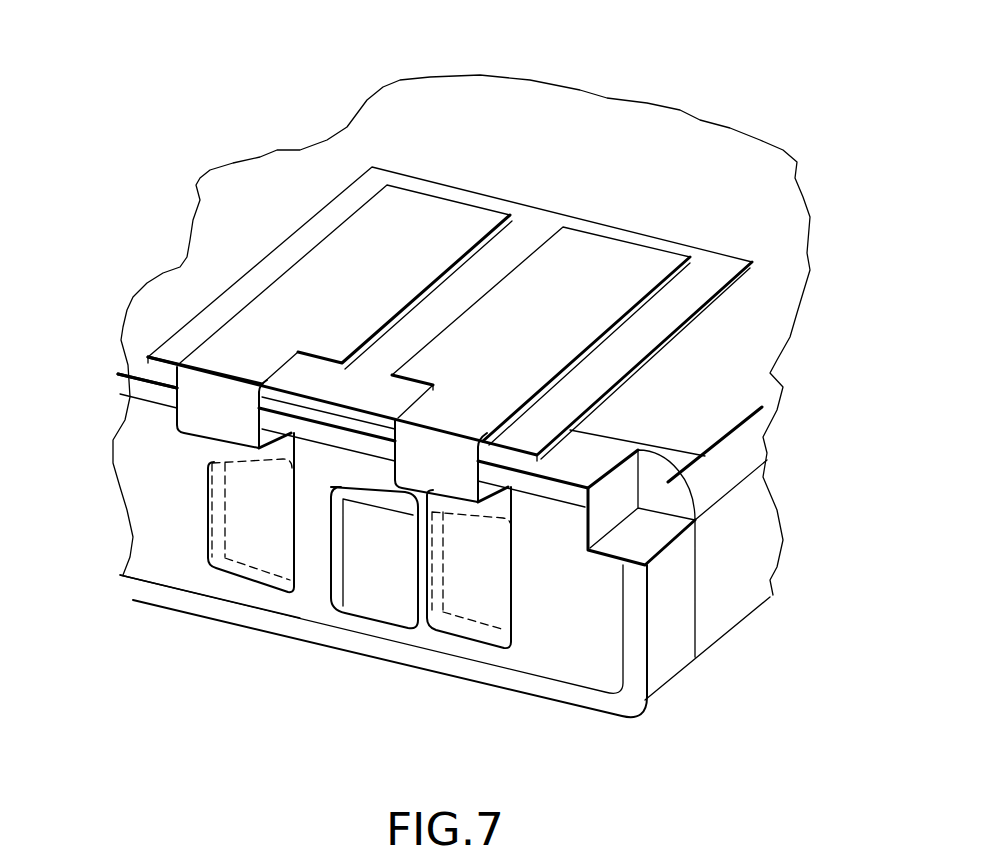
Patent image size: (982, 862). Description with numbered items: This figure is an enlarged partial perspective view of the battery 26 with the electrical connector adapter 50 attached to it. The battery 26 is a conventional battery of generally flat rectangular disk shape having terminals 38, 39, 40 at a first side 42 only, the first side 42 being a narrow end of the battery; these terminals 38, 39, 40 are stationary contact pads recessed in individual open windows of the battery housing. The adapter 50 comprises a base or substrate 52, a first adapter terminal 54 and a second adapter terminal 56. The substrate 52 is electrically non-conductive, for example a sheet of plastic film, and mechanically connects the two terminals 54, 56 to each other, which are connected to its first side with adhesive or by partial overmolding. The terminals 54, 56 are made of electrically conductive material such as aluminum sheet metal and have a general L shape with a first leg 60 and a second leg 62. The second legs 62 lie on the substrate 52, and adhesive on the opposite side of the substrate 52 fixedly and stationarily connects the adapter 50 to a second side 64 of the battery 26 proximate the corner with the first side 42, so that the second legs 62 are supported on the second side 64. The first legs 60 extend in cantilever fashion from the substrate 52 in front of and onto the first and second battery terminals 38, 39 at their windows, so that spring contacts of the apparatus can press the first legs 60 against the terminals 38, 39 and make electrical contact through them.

The battery 26 is at (673, 657).
The first battery terminal 38 is at (268, 597).
The second battery terminal 39 is at (505, 650).
The battery terminal 40 is at (393, 597).
The first side 42 is at (163, 568).
The electrical connector adapter 50 is at (732, 260).
The substrate 52 is at (537, 207).
The first adapter terminal 54 is at (265, 335).
The second adapter terminal 56 is at (595, 255).
The first leg 60 is at (240, 522).
The second leg 62 is at (355, 250).
The second side 64 is at (488, 108).